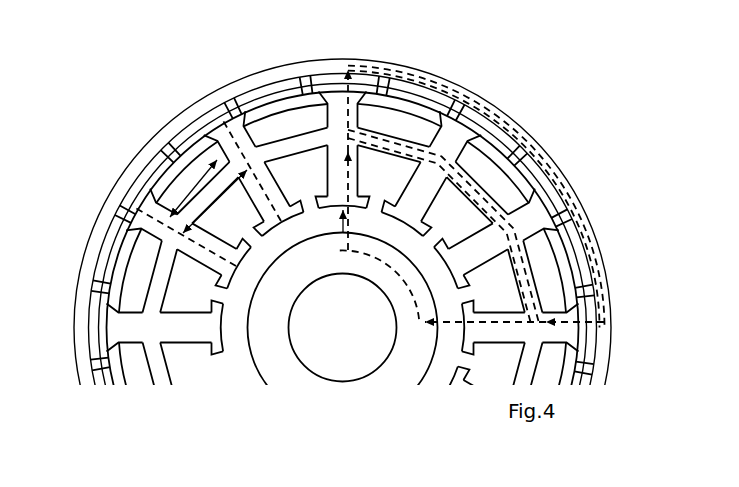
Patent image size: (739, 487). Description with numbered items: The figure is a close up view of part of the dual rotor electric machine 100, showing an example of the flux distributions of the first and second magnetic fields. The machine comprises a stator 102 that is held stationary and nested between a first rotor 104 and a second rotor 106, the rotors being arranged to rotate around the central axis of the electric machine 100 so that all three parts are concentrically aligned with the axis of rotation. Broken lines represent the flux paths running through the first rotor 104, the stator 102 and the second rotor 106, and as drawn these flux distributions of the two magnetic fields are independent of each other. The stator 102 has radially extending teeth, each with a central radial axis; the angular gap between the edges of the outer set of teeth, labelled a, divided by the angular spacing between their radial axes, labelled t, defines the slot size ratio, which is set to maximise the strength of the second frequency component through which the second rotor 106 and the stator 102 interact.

The dual rotor electric machine 100 is at (96, 101).
The stator 102 is at (378, 98).
The first rotor 104 is at (412, 254).
The second rotor 106 is at (270, 57).